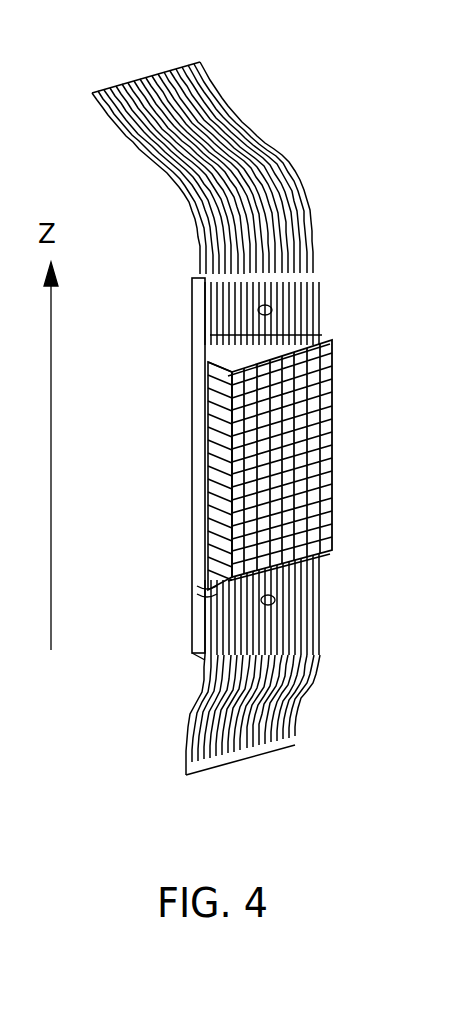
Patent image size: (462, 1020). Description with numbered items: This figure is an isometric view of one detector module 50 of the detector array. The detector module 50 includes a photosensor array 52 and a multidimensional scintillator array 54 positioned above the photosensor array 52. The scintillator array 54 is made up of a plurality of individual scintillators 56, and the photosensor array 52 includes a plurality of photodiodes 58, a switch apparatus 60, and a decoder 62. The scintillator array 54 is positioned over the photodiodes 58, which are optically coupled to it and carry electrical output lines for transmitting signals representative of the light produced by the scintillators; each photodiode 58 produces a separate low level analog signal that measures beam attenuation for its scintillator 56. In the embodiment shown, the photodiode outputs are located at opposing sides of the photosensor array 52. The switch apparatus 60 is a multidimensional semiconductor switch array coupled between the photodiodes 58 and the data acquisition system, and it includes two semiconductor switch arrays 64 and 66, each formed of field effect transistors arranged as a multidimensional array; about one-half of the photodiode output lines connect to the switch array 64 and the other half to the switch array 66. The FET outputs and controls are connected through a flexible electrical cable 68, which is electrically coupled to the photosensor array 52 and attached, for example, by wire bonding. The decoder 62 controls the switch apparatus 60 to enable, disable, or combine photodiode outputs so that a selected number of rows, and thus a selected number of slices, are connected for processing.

The detector module 50 is at (132, 690).
The photosensor array 52 is at (192, 526).
The scintillator array 54 is at (352, 458).
The scintillator 56 is at (330, 392).
The photodiode 58 is at (210, 452).
The switch apparatus 60 is at (360, 545).
The decoder 62 is at (345, 592).
The semiconductor switch array 64 is at (215, 368).
The semiconductor switch array 66 is at (197, 594).
The flexible electrical cable 68 is at (118, 86).